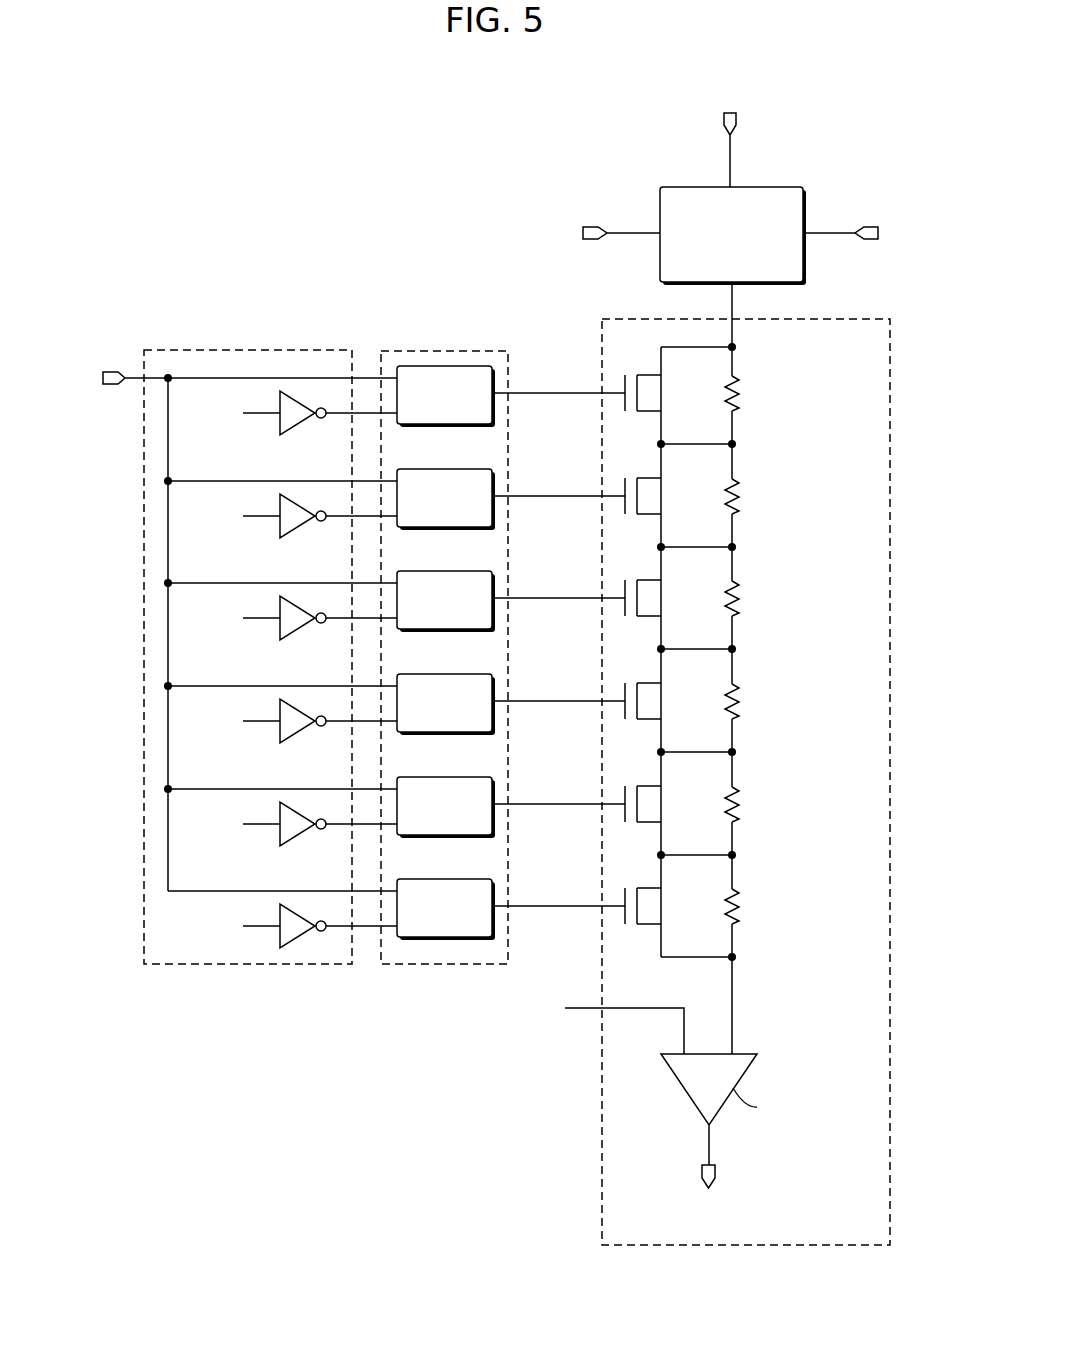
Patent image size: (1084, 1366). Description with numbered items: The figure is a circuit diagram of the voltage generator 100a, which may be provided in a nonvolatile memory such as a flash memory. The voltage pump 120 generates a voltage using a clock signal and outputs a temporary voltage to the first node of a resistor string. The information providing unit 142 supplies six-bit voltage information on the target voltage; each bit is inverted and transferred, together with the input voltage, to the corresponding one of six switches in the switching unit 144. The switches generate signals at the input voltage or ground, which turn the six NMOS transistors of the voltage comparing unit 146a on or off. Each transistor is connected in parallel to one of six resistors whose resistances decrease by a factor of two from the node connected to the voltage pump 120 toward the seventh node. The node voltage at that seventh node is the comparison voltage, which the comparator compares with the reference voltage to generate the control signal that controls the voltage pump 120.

The voltage generator 100a is at (332, 172).
The voltage pump 120 is at (769, 184).
The information providing unit 142 is at (250, 350).
The switching unit 144 is at (445, 350).
The voltage comparing unit 146a is at (808, 318).